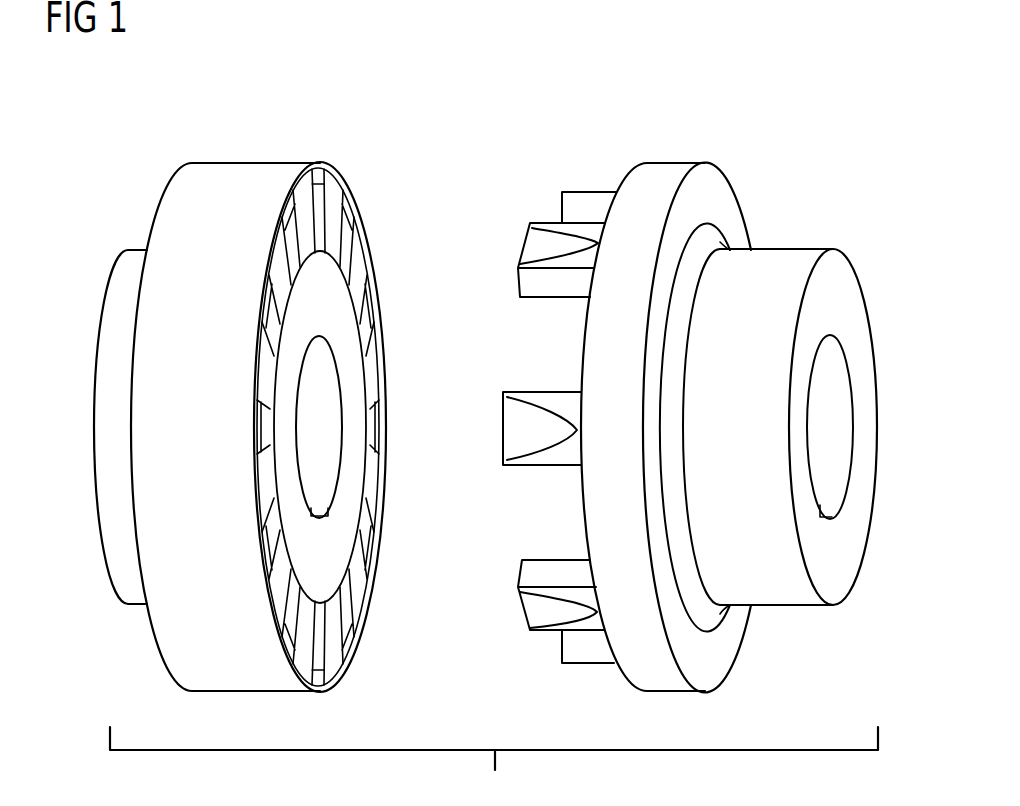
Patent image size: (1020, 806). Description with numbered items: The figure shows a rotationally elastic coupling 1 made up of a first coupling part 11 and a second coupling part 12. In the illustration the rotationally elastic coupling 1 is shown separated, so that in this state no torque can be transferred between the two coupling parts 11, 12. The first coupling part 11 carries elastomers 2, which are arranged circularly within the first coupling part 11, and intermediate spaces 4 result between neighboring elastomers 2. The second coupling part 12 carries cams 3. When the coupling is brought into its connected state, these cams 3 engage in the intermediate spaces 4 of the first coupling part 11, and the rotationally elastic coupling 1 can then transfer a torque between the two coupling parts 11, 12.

The rotationally elastic coupling 1 is at (230, 84).
The elastomers 2 is at (360, 268).
The cams 3 is at (537, 245).
The intermediate spaces 4 is at (330, 198).
The first coupling part 11 is at (270, 176).
The second coupling part 12 is at (672, 176).